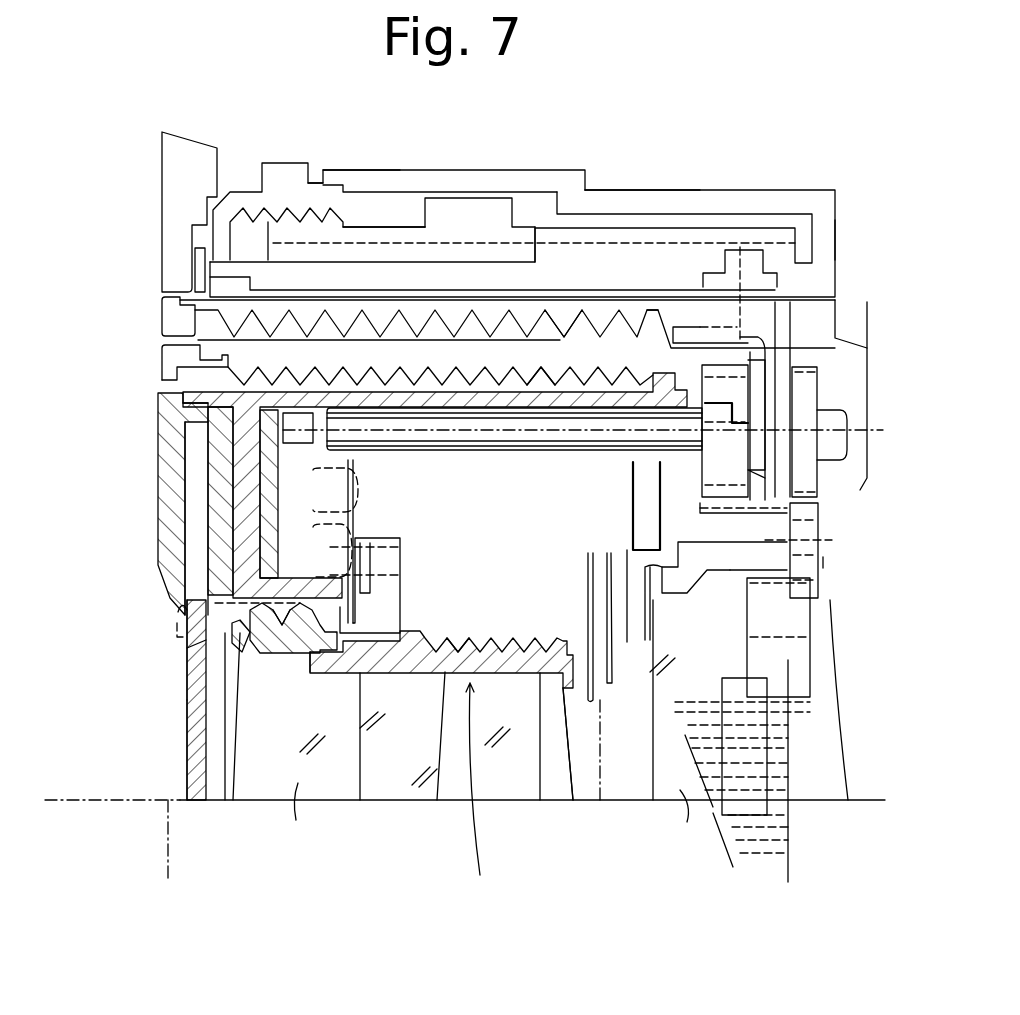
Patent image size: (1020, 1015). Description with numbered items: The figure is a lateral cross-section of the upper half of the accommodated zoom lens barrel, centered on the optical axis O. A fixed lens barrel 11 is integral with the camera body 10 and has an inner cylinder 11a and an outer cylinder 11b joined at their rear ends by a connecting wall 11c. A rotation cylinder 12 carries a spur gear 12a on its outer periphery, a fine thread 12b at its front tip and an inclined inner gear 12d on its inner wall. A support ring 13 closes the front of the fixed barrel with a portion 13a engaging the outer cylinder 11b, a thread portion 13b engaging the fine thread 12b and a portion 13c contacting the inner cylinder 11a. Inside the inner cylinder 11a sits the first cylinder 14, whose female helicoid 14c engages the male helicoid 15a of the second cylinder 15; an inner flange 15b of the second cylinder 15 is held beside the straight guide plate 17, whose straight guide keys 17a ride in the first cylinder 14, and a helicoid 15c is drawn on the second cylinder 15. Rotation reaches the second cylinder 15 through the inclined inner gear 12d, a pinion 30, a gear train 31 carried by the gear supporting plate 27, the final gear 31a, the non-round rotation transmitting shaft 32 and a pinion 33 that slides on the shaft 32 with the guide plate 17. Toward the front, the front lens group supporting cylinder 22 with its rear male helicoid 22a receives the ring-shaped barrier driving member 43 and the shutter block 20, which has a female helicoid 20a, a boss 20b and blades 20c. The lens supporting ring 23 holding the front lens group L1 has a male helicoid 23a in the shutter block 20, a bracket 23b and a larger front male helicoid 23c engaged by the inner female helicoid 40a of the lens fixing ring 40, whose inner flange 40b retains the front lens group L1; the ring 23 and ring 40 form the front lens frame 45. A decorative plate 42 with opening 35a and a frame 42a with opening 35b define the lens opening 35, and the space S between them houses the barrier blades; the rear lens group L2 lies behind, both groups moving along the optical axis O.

The camera body 10 is at (175, 165).
The fixed lens barrel 11 is at (808, 203).
The inner cylinder 11a is at (662, 275).
The outer cylinder 11b is at (627, 195).
The connecting wall 11c is at (833, 235).
The rotation cylinder 12 is at (570, 235).
The spur gear 12a is at (483, 212).
The fine thread 12b is at (338, 218).
The inclined inner gear 12d is at (788, 822).
The support ring 13 is at (276, 160).
The engaging portion 13a is at (322, 182).
The thread portion 13b is at (298, 205).
The contacting portion 13c is at (218, 241).
The first cylinder 14 is at (230, 314).
The female helicoid 14c is at (635, 330).
The second cylinder 15 is at (245, 355).
The male helicoid 15a is at (583, 315).
The inner flange 15b is at (700, 400).
The inner helicoid thread 15c is at (547, 375).
The straight guide plate 17 is at (757, 363).
The straight guide keys 17a is at (722, 328).
The shutter block 20 is at (445, 700).
The female helicoid 20a is at (545, 700).
The lens barrel body boss 20b is at (345, 518).
The blades 20c is at (600, 740).
The front lens group supporting cylinder 22 is at (185, 390).
The male helicoid 22a is at (622, 405).
The lens supporting ring 23 is at (370, 700).
The male helicoid 23a is at (487, 645).
The focusing ring bracket 23b is at (382, 560).
The male helicoid 23c is at (308, 640).
The gear supporting plate 27 is at (878, 338).
The pinion 30 is at (762, 705).
The gear train 31 is at (803, 623).
The final gear 31a is at (823, 405).
The rotation transmitting shaft 32 is at (530, 450).
The pinion 33 is at (722, 488).
The lens opening 35 is at (75, 602).
The opening 35a is at (178, 612).
The opening 35b is at (190, 648).
The lens fixing ring 40 is at (257, 622).
The inner female helicoid 40a is at (283, 630).
The inner flange 40b is at (178, 632).
The decorative plate 42 is at (166, 495).
The frame 42a is at (178, 435).
The barrier driving member 43 is at (272, 520).
The front lens frame 45 is at (481, 793).
The space S is at (196, 475).
The front lens group L1 is at (294, 815).
The rear lens group L2 is at (684, 821).
The optical axis O is at (465, 855).